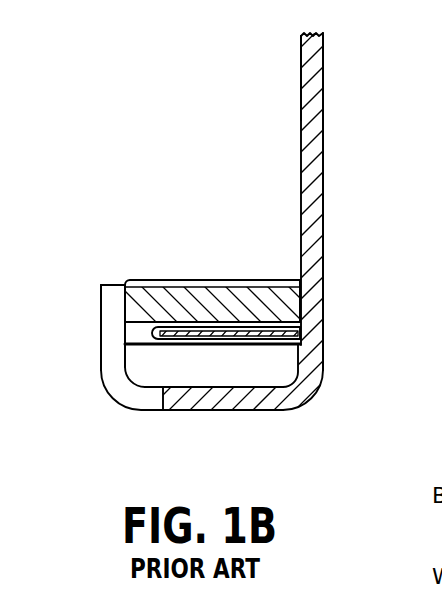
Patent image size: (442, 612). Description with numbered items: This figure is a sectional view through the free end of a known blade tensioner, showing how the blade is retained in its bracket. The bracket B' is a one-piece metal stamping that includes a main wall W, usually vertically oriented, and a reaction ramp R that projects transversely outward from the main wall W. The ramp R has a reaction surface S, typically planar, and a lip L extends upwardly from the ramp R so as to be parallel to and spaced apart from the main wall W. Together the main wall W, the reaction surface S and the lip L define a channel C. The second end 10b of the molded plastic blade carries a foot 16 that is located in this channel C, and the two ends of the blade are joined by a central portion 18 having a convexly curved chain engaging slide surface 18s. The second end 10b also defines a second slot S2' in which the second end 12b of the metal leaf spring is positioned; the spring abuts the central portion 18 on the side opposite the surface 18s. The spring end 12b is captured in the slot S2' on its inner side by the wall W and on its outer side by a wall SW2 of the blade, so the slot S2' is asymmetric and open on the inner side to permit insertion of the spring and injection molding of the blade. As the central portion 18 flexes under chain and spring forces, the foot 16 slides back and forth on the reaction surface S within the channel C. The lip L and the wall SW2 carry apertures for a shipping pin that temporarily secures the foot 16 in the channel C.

The second end of the blade 10b is at (148, 293).
The central portion 18 is at (203, 292).
The chain engaging slide surface 18s is at (233, 278).
The lip L is at (110, 312).
The wall SW2 is at (135, 333).
The channel C is at (149, 368).
The reaction surface S is at (192, 380).
The reaction ramp R is at (242, 400).
The second end of the spring 12b is at (251, 336).
The foot 16 is at (274, 372).
The second slot S2' is at (278, 302).
The bracket B' is at (358, 76).
The main wall W is at (303, 144).